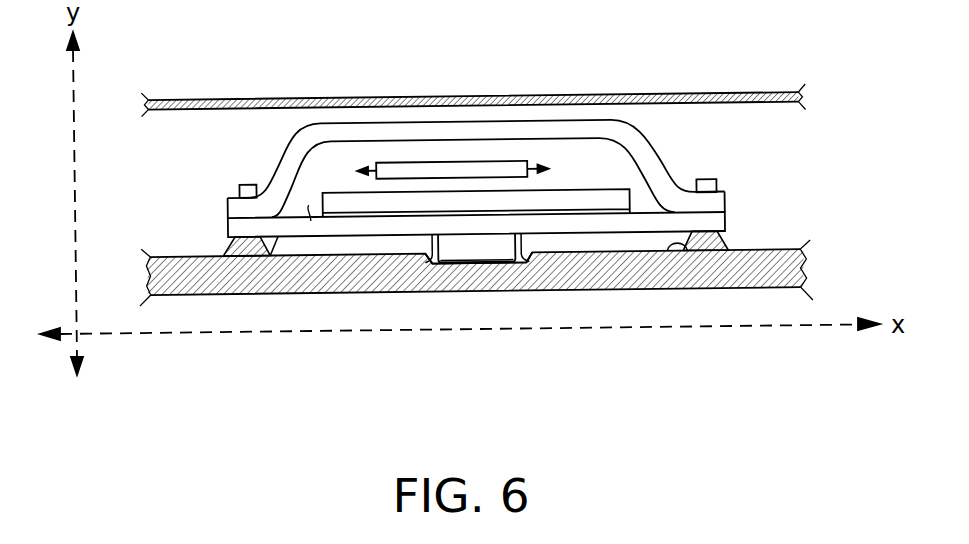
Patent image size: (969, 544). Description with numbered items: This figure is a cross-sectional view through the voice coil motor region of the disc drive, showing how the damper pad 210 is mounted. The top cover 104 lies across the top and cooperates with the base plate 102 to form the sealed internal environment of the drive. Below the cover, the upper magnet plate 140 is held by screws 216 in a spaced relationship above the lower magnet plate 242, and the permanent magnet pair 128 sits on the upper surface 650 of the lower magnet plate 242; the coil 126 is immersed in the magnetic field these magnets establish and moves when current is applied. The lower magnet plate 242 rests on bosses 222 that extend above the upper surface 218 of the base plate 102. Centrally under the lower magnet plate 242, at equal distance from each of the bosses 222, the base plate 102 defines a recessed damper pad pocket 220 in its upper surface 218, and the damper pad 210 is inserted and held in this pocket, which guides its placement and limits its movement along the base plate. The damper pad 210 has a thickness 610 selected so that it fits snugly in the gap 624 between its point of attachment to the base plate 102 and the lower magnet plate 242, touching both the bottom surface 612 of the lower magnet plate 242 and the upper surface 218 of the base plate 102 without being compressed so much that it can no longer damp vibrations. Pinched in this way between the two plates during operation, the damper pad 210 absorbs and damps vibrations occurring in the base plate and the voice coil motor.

The base plate 102 is at (186, 290).
The top cover 104 is at (251, 101).
The coil 126 is at (468, 171).
The permanent magnet pair 128 is at (578, 195).
The upper magnet plate 140 is at (665, 156).
The damper pad 210 is at (485, 252).
The screws 216 is at (241, 188).
The upper surface of the base plate 218 is at (688, 255).
The damper pad pocket 220 is at (527, 258).
The bosses 222 is at (230, 252).
The lower magnet plate 242 is at (722, 223).
The damper pad thickness 610 is at (530, 252).
The bottom surface of the lower magnet plate 612 is at (273, 258).
The gap 624 is at (426, 259).
The upper surface of the lower magnet plate 650 is at (311, 219).